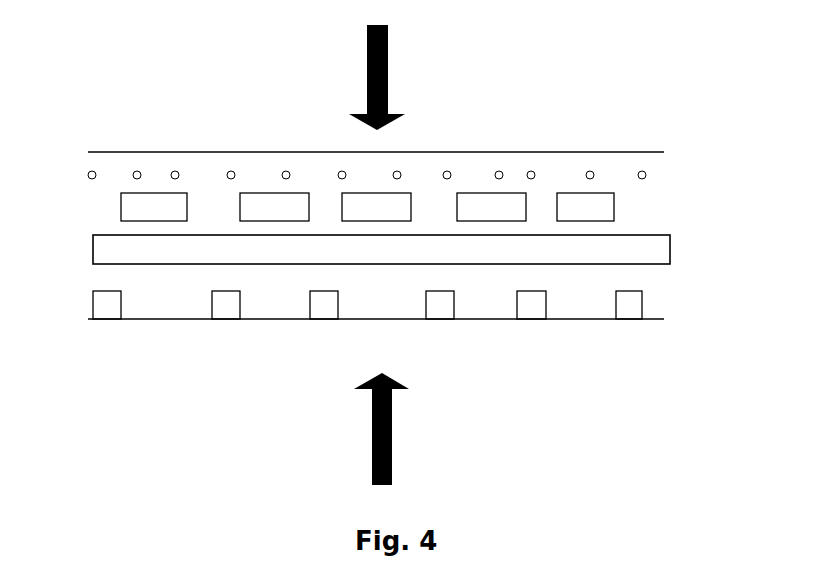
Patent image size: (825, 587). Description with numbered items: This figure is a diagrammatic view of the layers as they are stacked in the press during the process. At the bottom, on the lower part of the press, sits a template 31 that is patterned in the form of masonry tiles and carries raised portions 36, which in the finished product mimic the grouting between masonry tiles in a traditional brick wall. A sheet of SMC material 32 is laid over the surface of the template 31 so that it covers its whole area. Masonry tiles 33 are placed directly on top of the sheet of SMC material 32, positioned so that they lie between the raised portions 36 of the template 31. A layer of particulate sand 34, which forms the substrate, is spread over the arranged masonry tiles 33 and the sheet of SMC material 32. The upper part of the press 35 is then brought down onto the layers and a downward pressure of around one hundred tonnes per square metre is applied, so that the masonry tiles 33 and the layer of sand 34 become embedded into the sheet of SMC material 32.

The template 31 is at (613, 339).
The sheet of SMC material 32 is at (695, 236).
The masonry tiles 33 is at (97, 207).
The layer of particulate sand 34 is at (700, 174).
The upper part of the press 35 is at (160, 128).
The raised portions 36 is at (104, 333).